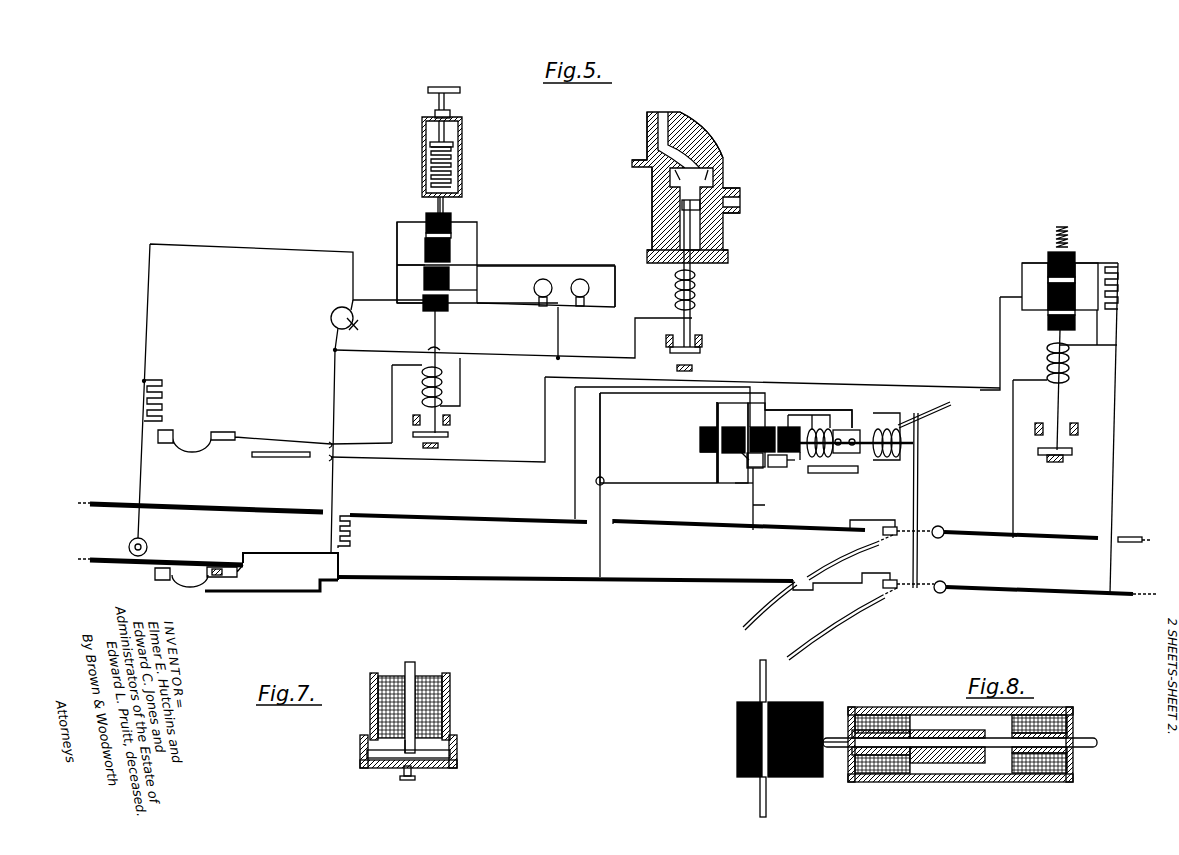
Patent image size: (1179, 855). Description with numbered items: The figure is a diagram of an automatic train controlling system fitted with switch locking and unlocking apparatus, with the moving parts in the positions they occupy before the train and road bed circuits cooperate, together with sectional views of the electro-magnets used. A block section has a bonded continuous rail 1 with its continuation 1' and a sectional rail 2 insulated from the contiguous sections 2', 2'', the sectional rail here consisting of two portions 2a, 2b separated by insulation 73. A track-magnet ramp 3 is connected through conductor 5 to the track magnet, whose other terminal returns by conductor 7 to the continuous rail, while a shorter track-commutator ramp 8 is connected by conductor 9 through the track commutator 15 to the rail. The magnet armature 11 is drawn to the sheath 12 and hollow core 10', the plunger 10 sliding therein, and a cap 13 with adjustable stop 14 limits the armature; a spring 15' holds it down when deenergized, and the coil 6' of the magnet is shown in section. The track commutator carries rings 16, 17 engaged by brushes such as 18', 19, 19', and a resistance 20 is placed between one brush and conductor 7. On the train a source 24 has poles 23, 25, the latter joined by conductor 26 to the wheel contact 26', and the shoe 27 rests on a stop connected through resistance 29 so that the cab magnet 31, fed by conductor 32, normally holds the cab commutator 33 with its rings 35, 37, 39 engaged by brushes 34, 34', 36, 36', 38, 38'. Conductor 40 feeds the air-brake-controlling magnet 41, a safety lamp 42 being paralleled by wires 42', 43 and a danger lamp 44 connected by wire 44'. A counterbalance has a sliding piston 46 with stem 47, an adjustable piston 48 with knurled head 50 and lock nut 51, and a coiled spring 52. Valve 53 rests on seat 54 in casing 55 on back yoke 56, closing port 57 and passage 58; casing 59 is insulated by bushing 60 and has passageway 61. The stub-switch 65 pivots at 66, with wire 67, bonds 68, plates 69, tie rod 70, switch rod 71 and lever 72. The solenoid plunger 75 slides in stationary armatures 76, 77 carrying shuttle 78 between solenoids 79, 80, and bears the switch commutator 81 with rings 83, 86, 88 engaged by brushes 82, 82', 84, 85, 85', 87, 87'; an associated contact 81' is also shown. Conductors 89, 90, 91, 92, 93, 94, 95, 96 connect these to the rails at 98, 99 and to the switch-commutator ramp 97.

In FIG. 5, the continuous rail 1 is at (565, 554).
In FIG. 5, the rail section 1' is at (1051, 583).
In FIG. 5, the sectional rail 2 is at (208, 574).
In FIG. 5, the contiguous section of sectional rail 2' is at (200, 517).
In FIG. 5, the contiguous section of sectional rail 2'' is at (1135, 548).
In FIG. 5, the portion of sectional rail 2a is at (466, 519).
In FIG. 5, the portion of sectional rail 2b is at (705, 523).
In FIG. 5, the track-magnet ramp 3 is at (275, 594).
In FIG. 5, the conductor 5 is at (1014, 499).
In FIG. 5, the solenoid coil 6' is at (1066, 363).
In FIG. 7, the solenoid coil 6' is at (424, 703).
In FIG. 5, the conductor 7 is at (1106, 428).
In FIG. 5, the track-commutator ramp 8 is at (288, 457).
In FIG. 5, the conductor 9 is at (489, 462).
In FIG. 5, the plunger 10 is at (760, 325).
In FIG. 7, the plunger 10 is at (429, 700).
In FIG. 7, the hollow core 10' is at (392, 698).
In FIG. 5, the armature 11 is at (755, 403).
In FIG. 7, the armature 11 is at (424, 756).
In FIG. 5, the sheath 12 is at (451, 422).
In FIG. 7, the sheath 12 is at (450, 709).
In FIG. 7, the cap 13 is at (458, 765).
In FIG. 5, the adjustable stop 14 is at (732, 418).
In FIG. 7, the adjustable stop 14 is at (418, 779).
In FIG. 5, the track commutator 15 is at (1073, 260).
In FIG. 5, the spring 15' is at (1076, 236).
In FIG. 5, the conducting ring 16 is at (1048, 286).
In FIG. 5, the conducting ring 17 is at (1051, 321).
In FIG. 5, the brush 18' is at (1035, 253).
In FIG. 5, the brush 19 is at (1086, 286).
In FIG. 5, the brush 19' is at (1050, 296).
In FIG. 5, the resistance 20 is at (1120, 305).
In FIG. 5, the pole 23 is at (360, 329).
In FIG. 5, the source of electrical energy 24 is at (315, 436).
In FIG. 5, the pole 25 is at (348, 305).
In FIG. 5, the conductor 26 is at (280, 391).
In FIG. 5, the contact member 26' is at (150, 543).
In FIG. 5, the track-commutator ramp-shoe 27 is at (193, 451).
In FIG. 5, the resistance 29 is at (162, 400).
In FIG. 5, the cab or control magnet 31 is at (442, 386).
In FIG. 5, the conductor 32 is at (440, 351).
In FIG. 5, the cab commutator 33 is at (452, 215).
In FIG. 5, the brush 34 is at (451, 262).
In FIG. 5, the brush 34' is at (384, 253).
In FIG. 5, the ring 35 is at (449, 236).
In FIG. 5, the brush 36 is at (449, 250).
In FIG. 5, the brush 36' is at (411, 253).
In FIG. 5, the ring 37 is at (447, 278).
In FIG. 5, the brush 38 is at (445, 307).
In FIG. 5, the brush 38' is at (410, 289).
In FIG. 5, the ring 39 is at (452, 291).
In FIG. 5, the conductor 40 is at (546, 279).
In FIG. 5, the air-brake-controlling magnet 41 is at (696, 290).
In FIG. 5, the safety signal indicating device 42 is at (589, 288).
In FIG. 5, the wire 42' is at (630, 286).
In FIG. 5, the wire 43 is at (558, 331).
In FIG. 5, the danger signal indicating device 44 is at (529, 289).
In FIG. 5, the wire 44' is at (517, 311).
In FIG. 5, the piston 46 is at (460, 193).
In FIG. 5, the stem 47 is at (437, 205).
In FIG. 5, the piston 48 is at (460, 143).
In FIG. 5, the knurled head 50 is at (460, 90).
In FIG. 5, the lock nut 51 is at (451, 113).
In FIG. 5, the coiled spring 52 is at (459, 167).
In FIG. 5, the valve 53 is at (745, 193).
In FIG. 5, the seat 54 is at (722, 177).
In FIG. 5, the casing 55 is at (685, 187).
In FIG. 5, the back yoke 56 is at (700, 256).
In FIG. 5, the port 57 is at (712, 153).
In FIG. 5, the passage 58 is at (747, 211).
In FIG. 5, the casing of the blanking valve 59 is at (647, 132).
In FIG. 5, the bushing 60 is at (652, 193).
In FIG. 5, the passageway 61 is at (632, 160).
In FIG. 5, the switch 65 is at (920, 583).
In FIG. 5, the pivot 66 is at (945, 531).
In FIG. 5, the wire 67 is at (796, 589).
In FIG. 5, the bond 68 is at (844, 547).
In FIG. 5, the plate 69 is at (892, 526).
In FIG. 5, the tie rod 70 is at (857, 557).
In FIG. 5, the switch rod 71 is at (920, 443).
In FIG. 5, the switch lever 72 is at (926, 415).
In FIG. 5, the insulation 73 is at (605, 519).
In FIG. 5, the plunger 75 is at (908, 452).
In FIG. 8, the plunger 75 is at (1097, 744).
In FIG. 5, the stationary armature 76 is at (897, 459).
In FIG. 8, the stationary armature 76 is at (1073, 746).
In FIG. 5, the stationary armature 77 is at (815, 449).
In FIG. 8, the stationary armature 77 is at (850, 761).
In FIG. 5, the shuttle 78 is at (846, 450).
In FIG. 8, the shuttle 78 is at (945, 730).
In FIG. 5, the solenoid 79 is at (850, 413).
In FIG. 8, the solenoid 79 is at (890, 715).
In FIG. 5, the solenoid 80 is at (887, 428).
In FIG. 8, the solenoid 80 is at (1045, 715).
In FIG. 5, the switch commutator 81 is at (733, 443).
In FIG. 8, the switch commutator 81 is at (784, 725).
In FIG. 5, the magnet contact 81' is at (737, 484).
In FIG. 5, the brush 82 is at (704, 425).
In FIG. 5, the brush 82' is at (696, 459).
In FIG. 5, the ring 83 is at (716, 428).
In FIG. 5, the brush 84 is at (733, 430).
In FIG. 5, the brush 85 is at (761, 435).
In FIG. 5, the brush 85' is at (765, 473).
In FIG. 5, the ring 86 is at (742, 458).
In FIG. 5, the brush 87 is at (785, 432).
In FIG. 8, the brush 87 is at (776, 681).
In FIG. 5, the brush 87' is at (779, 462).
In FIG. 8, the brush 87' is at (751, 797).
In FIG. 5, the ring 88 is at (797, 462).
In FIG. 5, the conductor 89 is at (561, 453).
In FIG. 5, the conductor 90 is at (601, 447).
In FIG. 5, the wire 91 is at (769, 497).
In FIG. 5, the wire 92 is at (676, 449).
In FIG. 5, the wire 93 is at (771, 411).
In FIG. 5, the wire 94 is at (792, 415).
In FIG. 5, the wire 95 is at (814, 420).
In FIG. 5, the wire 96 is at (790, 464).
In FIG. 5, the switch-commutator ramp 97 is at (828, 473).
In FIG. 5, the rail connection point 98 is at (596, 494).
In FIG. 5, the rail connection point 99 is at (752, 534).